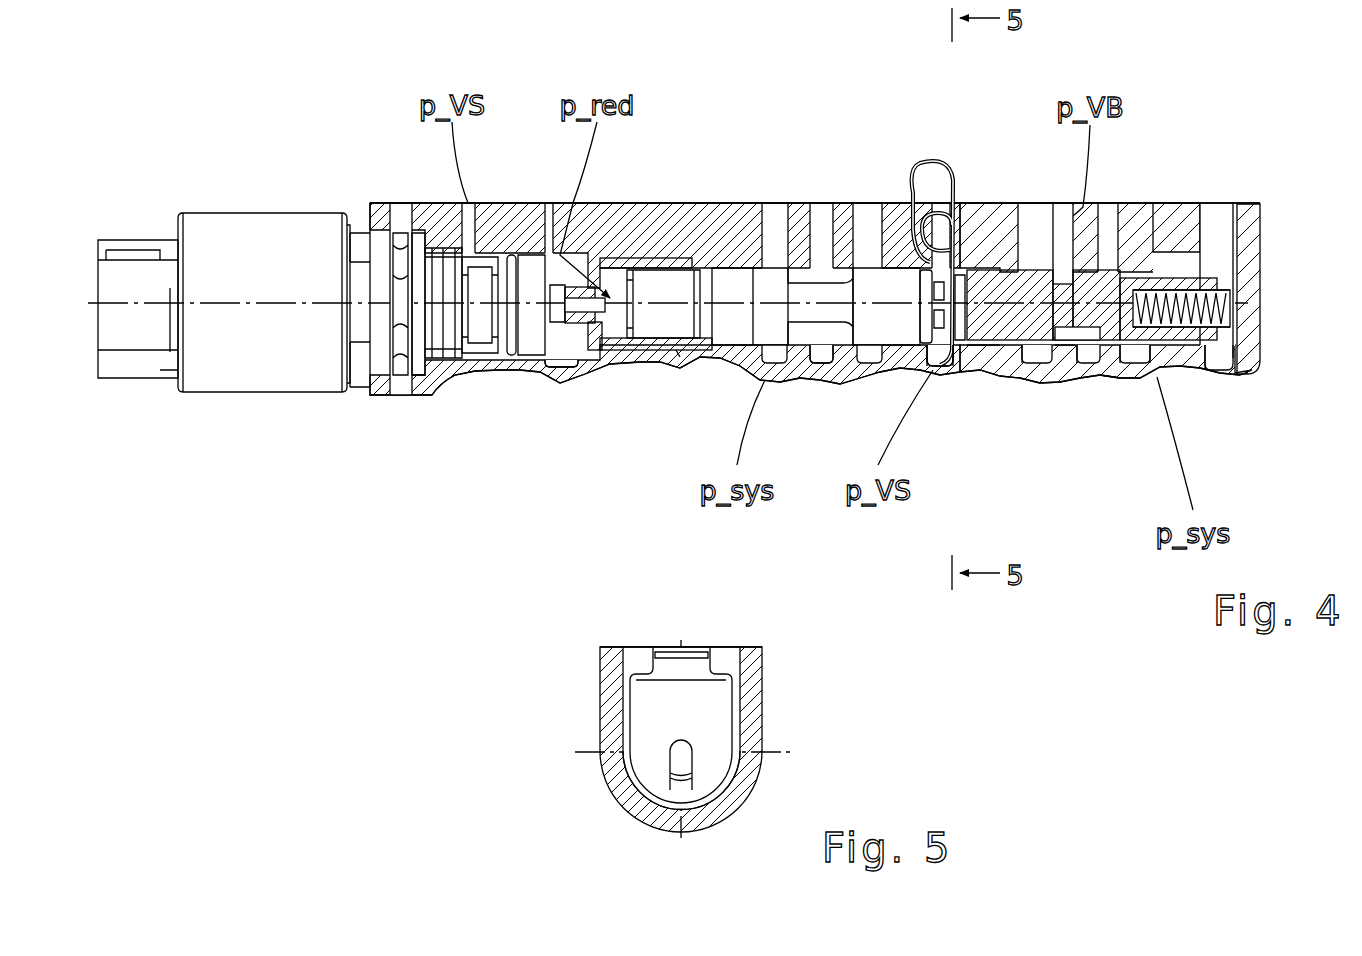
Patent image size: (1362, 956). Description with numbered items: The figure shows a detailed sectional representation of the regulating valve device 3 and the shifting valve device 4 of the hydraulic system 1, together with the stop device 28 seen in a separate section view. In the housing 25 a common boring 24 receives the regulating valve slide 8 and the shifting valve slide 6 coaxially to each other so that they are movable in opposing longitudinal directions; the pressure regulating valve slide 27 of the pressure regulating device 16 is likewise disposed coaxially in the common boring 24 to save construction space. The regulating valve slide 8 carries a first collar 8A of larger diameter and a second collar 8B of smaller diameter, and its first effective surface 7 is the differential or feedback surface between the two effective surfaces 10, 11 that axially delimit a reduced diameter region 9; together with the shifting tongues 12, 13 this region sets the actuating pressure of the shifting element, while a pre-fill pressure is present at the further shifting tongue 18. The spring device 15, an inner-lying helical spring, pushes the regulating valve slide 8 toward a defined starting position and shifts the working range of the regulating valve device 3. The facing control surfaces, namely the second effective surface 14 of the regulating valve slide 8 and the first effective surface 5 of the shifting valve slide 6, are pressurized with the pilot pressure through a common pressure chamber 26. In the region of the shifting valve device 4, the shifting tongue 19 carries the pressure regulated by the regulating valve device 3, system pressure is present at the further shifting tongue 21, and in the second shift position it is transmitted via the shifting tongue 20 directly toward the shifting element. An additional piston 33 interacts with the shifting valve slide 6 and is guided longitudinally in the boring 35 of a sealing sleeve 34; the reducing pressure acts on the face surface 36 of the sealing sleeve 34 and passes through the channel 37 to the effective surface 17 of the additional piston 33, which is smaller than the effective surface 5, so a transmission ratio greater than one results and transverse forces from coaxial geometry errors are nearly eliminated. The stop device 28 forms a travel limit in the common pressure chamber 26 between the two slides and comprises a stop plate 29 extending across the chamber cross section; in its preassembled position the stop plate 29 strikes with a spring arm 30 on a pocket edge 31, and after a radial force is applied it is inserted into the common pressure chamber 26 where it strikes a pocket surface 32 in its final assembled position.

In FIG. 4, the hydraulic system 1 is at (236, 130).
In FIG. 5, the hydraulic system 1 is at (575, 733).
In FIG. 4, the regulating valve device 3 is at (1109, 404).
In FIG. 4, the shifting valve device 4 is at (655, 380).
In FIG. 4, the first effective surface of the shifting valve slide 5 is at (940, 330).
In FIG. 5, the first effective surface of the shifting valve slide 5 is at (690, 760).
In FIG. 4, the shifting valve slide 6 is at (707, 265).
In FIG. 5, the shifting valve slide 6 is at (690, 778).
In FIG. 4, the first effective surface of the regulating valve slide 7 is at (1067, 370).
In FIG. 4, the regulating valve slide 8 is at (1000, 355).
In FIG. 4, the first collar of the regulating valve slide 8A is at (1035, 270).
In FIG. 4, the second collar of the regulating valve slide 8B is at (1227, 233).
In FIG. 4, the reduced diameter region 9 is at (1140, 230).
In FIG. 4, the effective surface 10 is at (1088, 360).
In FIG. 4, the effective surface 11 is at (1125, 350).
In FIG. 4, the shifting tongue 12 is at (1160, 350).
In FIG. 4, the shifting tongue 13 is at (1137, 233).
In FIG. 4, the second effective surface of the regulating valve slide 14 is at (957, 370).
In FIG. 4, the spring device 15 is at (1250, 373).
In FIG. 4, the pressure regulating device 16 is at (236, 400).
In FIG. 4, the effective surface of the shifting valve slide 17 is at (573, 270).
In FIG. 4, the further shifting tongue of the regulating valve device 18 is at (1035, 360).
In FIG. 4, the shifting tongue of the shifting valve device 19 is at (867, 222).
In FIG. 4, the further shifting tongue of the shifting valve device 20 is at (818, 222).
In FIG. 4, the further shifting tongue of the shifting valve device 21 is at (772, 222).
In FIG. 4, the common boring 24 is at (815, 350).
In FIG. 5, the common boring 24 is at (612, 790).
In FIG. 4, the housing 25 is at (397, 395).
In FIG. 5, the housing 25 is at (612, 693).
In FIG. 4, the common pressure chamber 26 is at (1005, 257).
In FIG. 4, the pressure regulating valve slide 27 is at (418, 378).
In FIG. 4, the stop device 28 is at (937, 158).
In FIG. 5, the stop device 28 is at (626, 722).
In FIG. 4, the stop plate 29 is at (887, 250).
In FIG. 5, the stop plate 29 is at (712, 713).
In FIG. 4, the spring arm 30 is at (895, 230).
In FIG. 5, the spring arm 30 is at (700, 658).
In FIG. 4, the pocket edge 31 is at (958, 290).
In FIG. 4, the pocket surface 32 is at (935, 370).
In FIG. 4, the additional piston 33 is at (665, 287).
In FIG. 4, the sealing sleeve 34 is at (677, 370).
In FIG. 4, the boring of the sealing sleeve 35 is at (610, 377).
In FIG. 4, the face surface of the sealing sleeve 36 is at (508, 203).
In FIG. 4, the channel of the sealing sleeve 37 is at (580, 384).